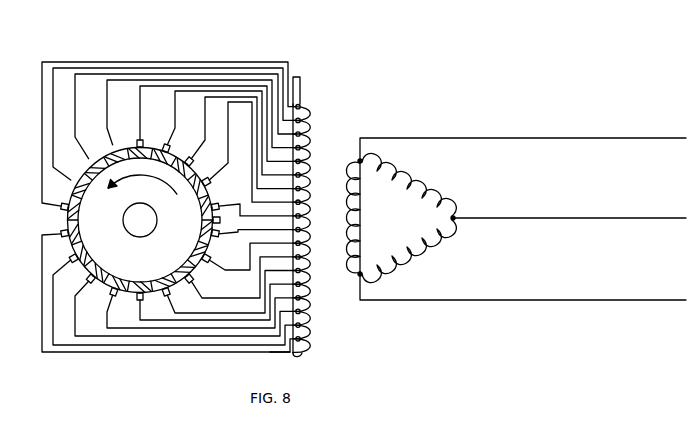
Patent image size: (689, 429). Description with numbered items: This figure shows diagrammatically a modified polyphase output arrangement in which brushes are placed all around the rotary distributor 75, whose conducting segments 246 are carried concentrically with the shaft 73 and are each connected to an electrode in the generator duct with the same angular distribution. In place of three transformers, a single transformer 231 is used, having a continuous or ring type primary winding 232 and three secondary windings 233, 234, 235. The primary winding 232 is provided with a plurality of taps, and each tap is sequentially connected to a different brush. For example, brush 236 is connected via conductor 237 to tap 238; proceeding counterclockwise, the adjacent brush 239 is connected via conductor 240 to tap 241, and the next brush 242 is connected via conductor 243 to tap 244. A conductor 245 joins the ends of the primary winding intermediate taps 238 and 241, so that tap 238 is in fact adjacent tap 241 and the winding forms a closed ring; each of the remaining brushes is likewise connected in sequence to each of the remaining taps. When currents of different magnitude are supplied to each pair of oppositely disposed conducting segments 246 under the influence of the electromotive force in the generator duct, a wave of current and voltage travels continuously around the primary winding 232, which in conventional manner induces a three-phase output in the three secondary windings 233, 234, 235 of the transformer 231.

The shaft 73 is at (157, 222).
The rotary distributor 75 is at (107, 231).
The single transformer 231 is at (340, 245).
The ring type primary winding 232 is at (311, 143).
The secondary winding 233 is at (413, 194).
The secondary winding 234 is at (398, 252).
The secondary winding 235 is at (366, 228).
The brush 236 is at (70, 190).
The conductor 237 is at (99, 61).
The tap 238 is at (298, 105).
The brush 239 is at (64, 233).
The conductor 240 is at (63, 352).
The tap 241 is at (305, 352).
The brush 242 is at (67, 257).
The conductor 243 is at (110, 347).
The tap 244 is at (300, 328).
The conductor 245 is at (294, 356).
The conducting segments 246 is at (154, 285).